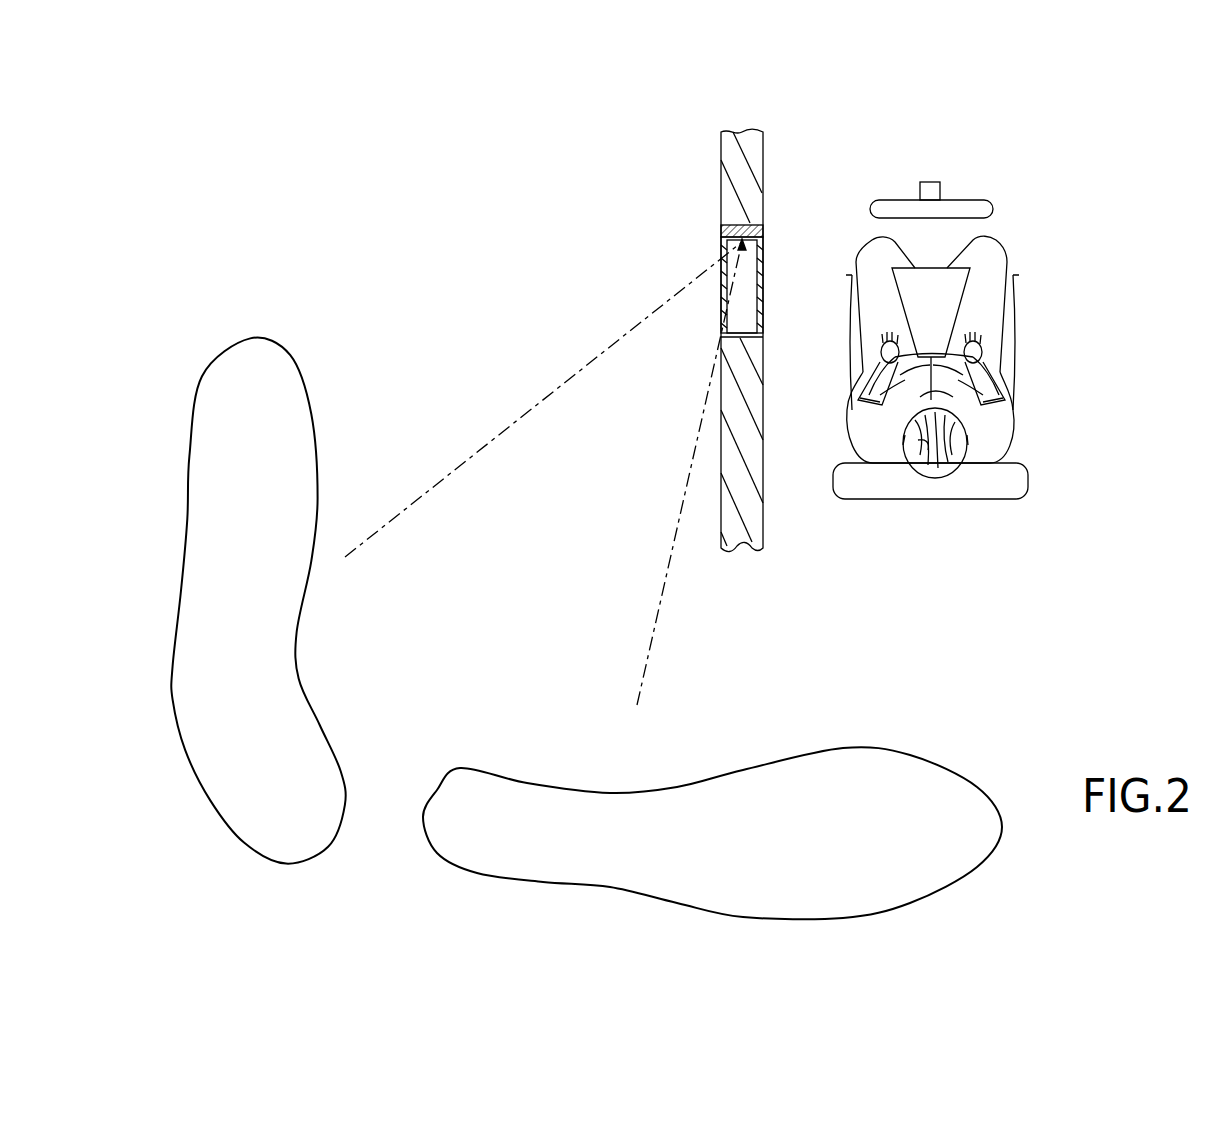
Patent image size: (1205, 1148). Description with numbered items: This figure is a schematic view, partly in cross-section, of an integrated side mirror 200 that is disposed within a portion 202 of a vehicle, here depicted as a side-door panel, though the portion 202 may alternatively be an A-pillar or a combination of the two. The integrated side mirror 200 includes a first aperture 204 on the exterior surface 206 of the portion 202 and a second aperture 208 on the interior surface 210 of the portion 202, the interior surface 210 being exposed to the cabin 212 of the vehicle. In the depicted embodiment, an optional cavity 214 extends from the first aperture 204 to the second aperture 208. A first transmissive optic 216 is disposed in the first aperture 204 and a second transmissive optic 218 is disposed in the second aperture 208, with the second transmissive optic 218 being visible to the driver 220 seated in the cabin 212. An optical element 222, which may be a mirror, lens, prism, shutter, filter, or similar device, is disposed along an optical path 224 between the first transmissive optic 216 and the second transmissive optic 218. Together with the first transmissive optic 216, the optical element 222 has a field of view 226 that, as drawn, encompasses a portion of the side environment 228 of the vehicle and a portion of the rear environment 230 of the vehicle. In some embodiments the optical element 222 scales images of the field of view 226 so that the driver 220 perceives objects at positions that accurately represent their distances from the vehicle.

The integrated side mirror 200 is at (547, 135).
The portion of a vehicle 202 is at (742, 549).
The first aperture 204 is at (707, 297).
The exterior surface 206 is at (720, 190).
The second aperture 208 is at (777, 263).
The interior surface 210 is at (763, 181).
The cabin 212 is at (997, 340).
The cavity 214 is at (742, 298).
The first transmissive optic 216 is at (720, 250).
The second transmissive optic 218 is at (763, 288).
The driver 220 is at (1013, 415).
The optical element 222 is at (740, 226).
The optical path 224 is at (752, 258).
The field of view 226 is at (637, 705).
The side environment 228 is at (258, 631).
The rear environment 230 is at (728, 851).